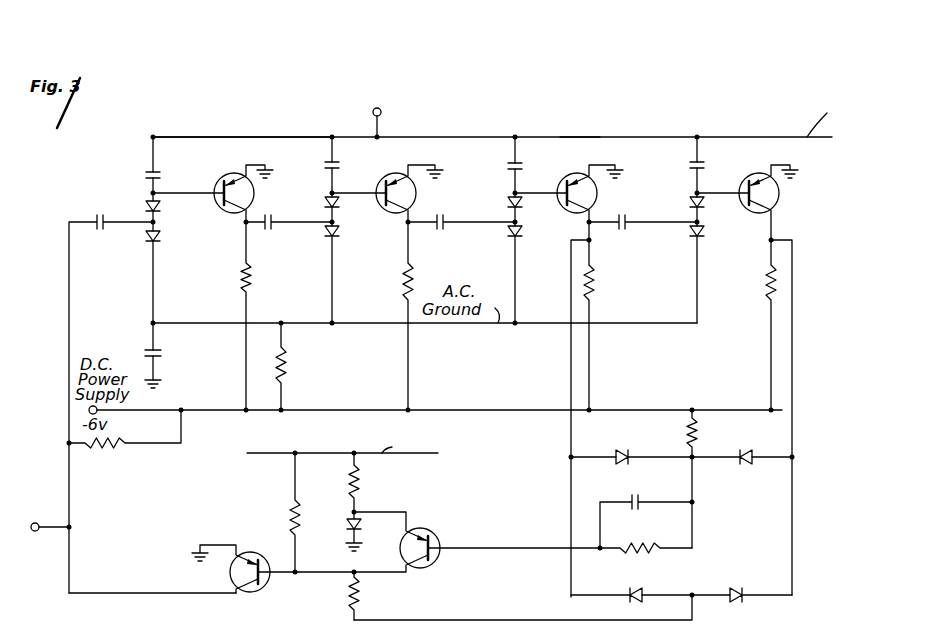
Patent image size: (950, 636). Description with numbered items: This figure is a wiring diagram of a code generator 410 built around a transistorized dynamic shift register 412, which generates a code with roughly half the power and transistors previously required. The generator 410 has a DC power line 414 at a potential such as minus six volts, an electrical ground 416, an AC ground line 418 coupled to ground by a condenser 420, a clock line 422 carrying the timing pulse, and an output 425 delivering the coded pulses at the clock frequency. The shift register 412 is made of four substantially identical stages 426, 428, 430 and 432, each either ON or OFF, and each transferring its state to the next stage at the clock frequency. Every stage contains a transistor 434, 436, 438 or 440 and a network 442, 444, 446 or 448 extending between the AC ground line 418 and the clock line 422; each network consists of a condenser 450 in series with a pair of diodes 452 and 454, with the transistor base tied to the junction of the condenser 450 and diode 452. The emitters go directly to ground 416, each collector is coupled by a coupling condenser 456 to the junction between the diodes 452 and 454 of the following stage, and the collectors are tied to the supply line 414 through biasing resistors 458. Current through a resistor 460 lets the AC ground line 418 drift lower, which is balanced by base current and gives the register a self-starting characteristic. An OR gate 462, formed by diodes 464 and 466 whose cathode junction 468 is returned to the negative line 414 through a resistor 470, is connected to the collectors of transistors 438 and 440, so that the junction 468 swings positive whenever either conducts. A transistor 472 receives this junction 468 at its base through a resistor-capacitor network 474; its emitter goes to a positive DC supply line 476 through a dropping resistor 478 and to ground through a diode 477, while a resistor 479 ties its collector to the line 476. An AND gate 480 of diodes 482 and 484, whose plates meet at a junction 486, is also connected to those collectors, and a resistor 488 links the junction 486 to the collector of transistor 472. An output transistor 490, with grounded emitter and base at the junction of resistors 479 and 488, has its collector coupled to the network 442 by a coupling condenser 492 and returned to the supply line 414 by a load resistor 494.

The code generator 410 is at (577, 110).
The dynamic shift register 412 is at (210, 136).
The DC power line 414 is at (462, 409).
The electrical ground 416 is at (160, 381).
The AC ground line 418 is at (226, 322).
The condenser 420 is at (150, 350).
The clock line 422 is at (245, 137).
The output 425 is at (35, 532).
The stage 426 is at (216, 262).
The stage 428 is at (386, 273).
The stage 430 is at (558, 265).
The stage 432 is at (749, 256).
The transistor 434 is at (223, 182).
The transistor 436 is at (396, 214).
The transistor 438 is at (573, 178).
The transistor 440 is at (752, 178).
The network 442 is at (151, 153).
The network 444 is at (327, 151).
The network 446 is at (511, 151).
The network 448 is at (691, 149).
The condenser 450 is at (146, 173).
The diode 452 is at (150, 203).
The diode 454 is at (150, 243).
The coupling condenser 456 is at (266, 214).
The biasing resistor 458 is at (251, 283).
The resistor 460 is at (287, 375).
The OR gate 462 is at (722, 445).
The diode 464 is at (628, 465).
The diode 466 is at (746, 465).
The junction 468 is at (695, 461).
The resistor 470 is at (700, 422).
The transistor 472 is at (438, 566).
The resistor-capacitor network 474 is at (659, 539).
The positive DC supply line 476 is at (297, 452).
The diode 477 is at (345, 532).
The dropping resistor 478 is at (360, 490).
The resistor 479 is at (290, 522).
The AND gate 480 is at (706, 591).
The diode 482 is at (645, 577).
The diode 484 is at (746, 590).
The junction 486 is at (695, 598).
The resistor 488 is at (362, 596).
The output transistor 490 is at (243, 596).
The coupling condenser 492 is at (98, 214).
The load resistor 494 is at (103, 448).